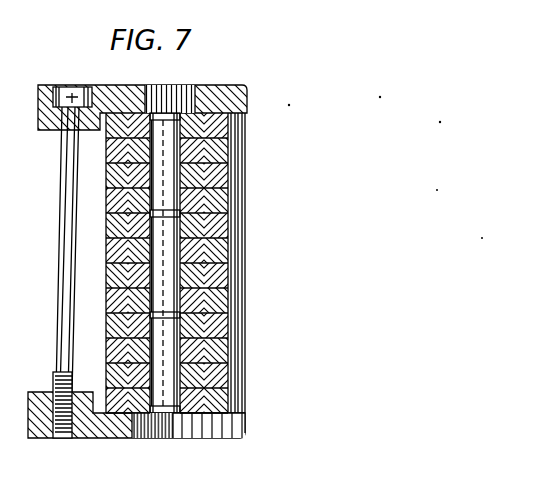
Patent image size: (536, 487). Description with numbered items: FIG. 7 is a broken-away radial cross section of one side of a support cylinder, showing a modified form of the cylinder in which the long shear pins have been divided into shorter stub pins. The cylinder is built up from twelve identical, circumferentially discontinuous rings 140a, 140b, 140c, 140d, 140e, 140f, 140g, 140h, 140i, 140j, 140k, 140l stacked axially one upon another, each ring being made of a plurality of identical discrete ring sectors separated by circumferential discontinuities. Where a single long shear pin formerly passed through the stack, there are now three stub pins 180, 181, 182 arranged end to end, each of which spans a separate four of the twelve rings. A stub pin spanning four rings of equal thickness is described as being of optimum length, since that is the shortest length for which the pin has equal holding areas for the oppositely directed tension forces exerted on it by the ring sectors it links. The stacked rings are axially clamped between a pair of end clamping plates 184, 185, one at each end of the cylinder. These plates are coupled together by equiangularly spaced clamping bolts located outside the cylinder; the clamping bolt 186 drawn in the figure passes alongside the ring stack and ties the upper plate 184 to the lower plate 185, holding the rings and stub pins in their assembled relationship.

The stub pin 180 is at (178, 120).
The stub pin 181 is at (155, 252).
The stub pin 182 is at (173, 412).
The end clamping plate 184 is at (103, 86).
The end clamping plate 185 is at (80, 432).
The tie rod / bolt 186 is at (64, 187).
The circumferentially discontinuous ring 140a is at (232, 133).
The circumferentially discontinuous ring 140b is at (232, 158).
The circumferentially discontinuous ring 140c is at (232, 183).
The circumferentially discontinuous ring 140d is at (232, 208).
The circumferentially discontinuous ring 140e is at (232, 233).
The circumferentially discontinuous ring 140f is at (232, 258).
The circumferentially discontinuous ring 140g is at (232, 283).
The circumferentially discontinuous ring 140h is at (232, 308).
The circumferentially discontinuous ring 140i is at (232, 333).
The circumferentially discontinuous ring 140j is at (232, 358).
The circumferentially discontinuous ring 140k is at (232, 383).
The circumferentially discontinuous ring 140l is at (232, 408).